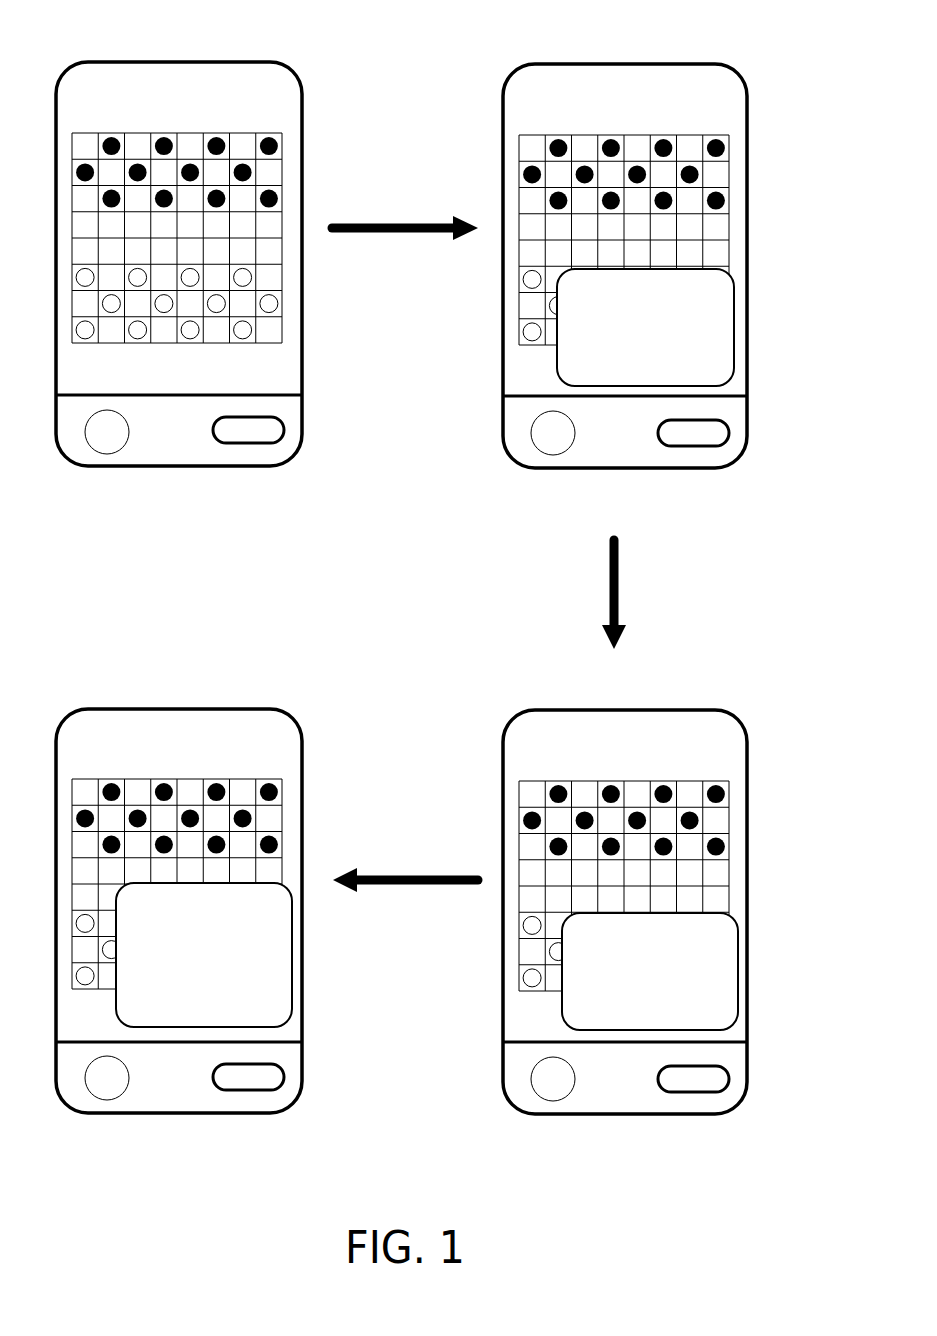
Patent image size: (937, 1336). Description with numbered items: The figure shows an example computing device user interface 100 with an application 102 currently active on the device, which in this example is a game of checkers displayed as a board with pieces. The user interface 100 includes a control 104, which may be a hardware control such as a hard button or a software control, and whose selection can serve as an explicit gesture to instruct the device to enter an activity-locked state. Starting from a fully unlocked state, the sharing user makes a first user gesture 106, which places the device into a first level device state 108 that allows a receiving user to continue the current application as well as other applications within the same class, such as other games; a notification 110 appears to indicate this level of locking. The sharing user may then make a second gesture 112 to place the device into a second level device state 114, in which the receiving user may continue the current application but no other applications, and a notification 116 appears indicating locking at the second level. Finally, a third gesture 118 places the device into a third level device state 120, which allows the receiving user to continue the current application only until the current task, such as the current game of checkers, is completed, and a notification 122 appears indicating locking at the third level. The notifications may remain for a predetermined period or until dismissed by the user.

The device user interface 100 is at (174, 263).
The application 102 is at (124, 133).
The control 104 is at (128, 443).
The first user gesture 106 is at (388, 247).
The first level device state 108 is at (674, 242).
The notification 110 is at (734, 313).
The second gesture 112 is at (702, 550).
The second level device state 114 is at (666, 888).
The notification 116 is at (738, 957).
The third gesture 118 is at (388, 897).
The third level device state 120 is at (233, 887).
The notification 122 is at (292, 994).